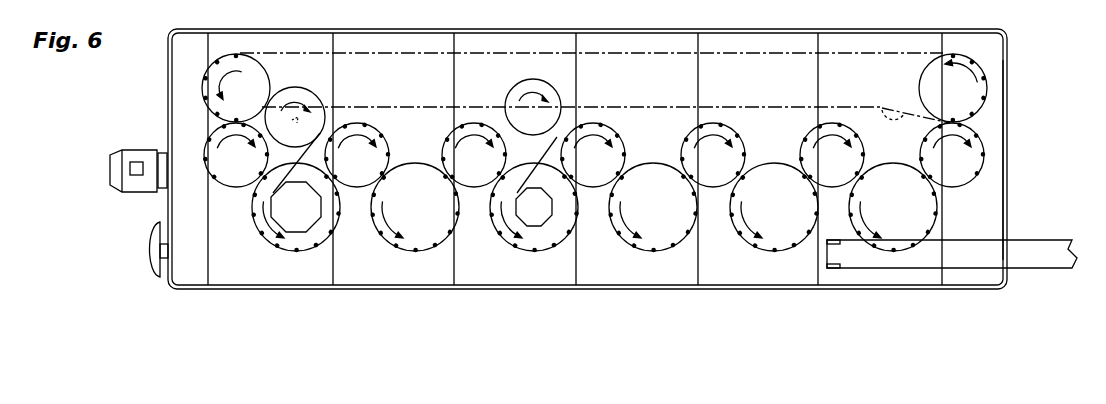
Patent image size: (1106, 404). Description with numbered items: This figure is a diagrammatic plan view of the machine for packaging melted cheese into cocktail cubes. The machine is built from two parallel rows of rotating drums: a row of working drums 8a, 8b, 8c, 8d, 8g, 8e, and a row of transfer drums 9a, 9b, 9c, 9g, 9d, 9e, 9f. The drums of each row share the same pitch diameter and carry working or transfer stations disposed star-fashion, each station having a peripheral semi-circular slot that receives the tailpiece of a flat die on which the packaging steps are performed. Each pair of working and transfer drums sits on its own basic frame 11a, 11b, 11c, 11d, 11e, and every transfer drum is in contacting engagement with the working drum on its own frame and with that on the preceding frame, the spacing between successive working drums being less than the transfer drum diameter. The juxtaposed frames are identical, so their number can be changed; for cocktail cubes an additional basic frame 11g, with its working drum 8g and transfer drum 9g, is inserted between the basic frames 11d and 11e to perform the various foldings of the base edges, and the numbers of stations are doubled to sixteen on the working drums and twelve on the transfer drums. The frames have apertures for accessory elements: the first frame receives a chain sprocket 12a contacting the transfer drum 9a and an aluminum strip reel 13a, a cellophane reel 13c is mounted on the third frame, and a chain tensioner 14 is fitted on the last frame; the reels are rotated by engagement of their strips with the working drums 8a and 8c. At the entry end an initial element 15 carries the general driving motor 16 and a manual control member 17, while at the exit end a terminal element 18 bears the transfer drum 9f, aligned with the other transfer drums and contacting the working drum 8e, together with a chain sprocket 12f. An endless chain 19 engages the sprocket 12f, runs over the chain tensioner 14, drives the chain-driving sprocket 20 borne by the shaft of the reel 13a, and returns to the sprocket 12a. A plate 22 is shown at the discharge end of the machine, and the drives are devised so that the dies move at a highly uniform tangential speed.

The working drum 8a is at (318, 238).
The working drum 8b is at (435, 238).
The working drum 8c is at (542, 245).
The working drum 8d is at (767, 245).
The working drum 8e is at (924, 217).
The working drum 8g is at (662, 245).
The transfer drum 9a is at (217, 175).
The transfer drum 9b is at (377, 133).
The transfer drum 9c is at (465, 133).
The transfer drum 9d is at (737, 148).
The transfer drum 9e is at (855, 152).
The transfer drum 9f is at (985, 147).
The transfer drum 9g is at (618, 150).
The basic frame 11a is at (290, 42).
The basic frame 11b is at (393, 42).
The basic frame 11c is at (515, 42).
The basic frame 11d is at (752, 42).
The basic frame 11e is at (865, 42).
The basic frame 11g is at (633, 42).
The chain sprocket 12a is at (257, 84).
The chain sprocket 12f is at (983, 82).
The aluminum strip reel 13a is at (317, 102).
The guide wheel 13c is at (552, 100).
The chain tensioner 14 is at (897, 108).
The initial element 15 is at (178, 32).
The general driving motor 16 is at (130, 148).
The manual control member 17 is at (150, 230).
The terminal element 18 is at (980, 40).
The endless chain 19 is at (760, 56).
The chain-driving sprocket 20 is at (297, 127).
The discharge plate 22 is at (1038, 255).